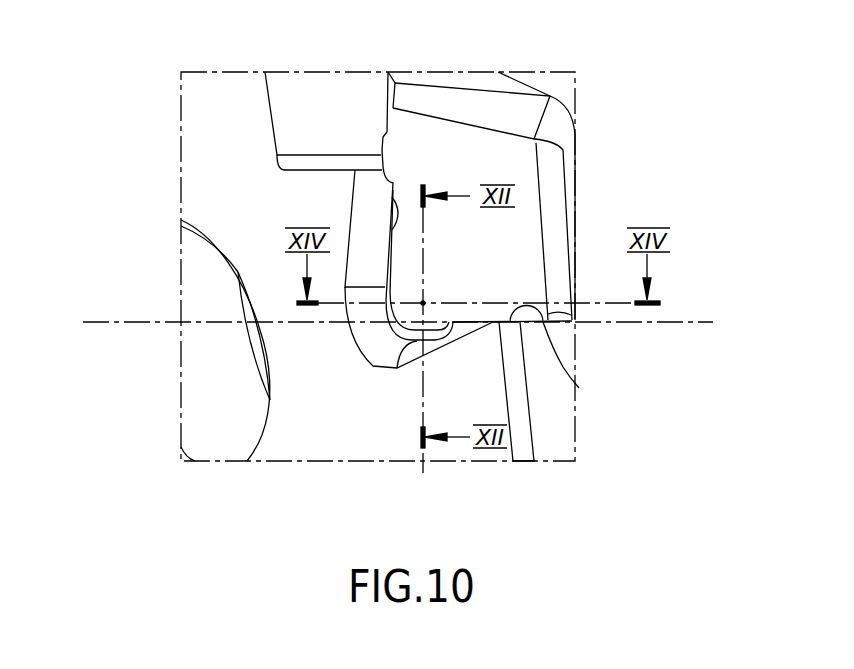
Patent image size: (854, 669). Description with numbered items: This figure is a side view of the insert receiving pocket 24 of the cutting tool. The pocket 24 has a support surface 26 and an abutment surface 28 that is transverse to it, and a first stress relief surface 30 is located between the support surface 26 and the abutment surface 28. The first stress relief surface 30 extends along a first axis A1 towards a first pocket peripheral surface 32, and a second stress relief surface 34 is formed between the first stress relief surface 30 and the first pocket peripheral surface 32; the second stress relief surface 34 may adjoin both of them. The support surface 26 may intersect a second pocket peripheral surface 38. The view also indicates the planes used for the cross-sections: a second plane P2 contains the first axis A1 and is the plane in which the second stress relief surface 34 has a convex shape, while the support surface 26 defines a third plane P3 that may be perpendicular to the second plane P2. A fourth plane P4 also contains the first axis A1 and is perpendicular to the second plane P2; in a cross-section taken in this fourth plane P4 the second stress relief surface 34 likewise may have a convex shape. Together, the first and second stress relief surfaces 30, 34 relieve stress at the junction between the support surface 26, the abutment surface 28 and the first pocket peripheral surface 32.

The pocket 24 is at (513, 233).
The support surface 26 is at (547, 333).
The abutment surface 28 is at (392, 198).
The first stress relief surface 30 is at (441, 332).
The first pocket peripheral surface 32 is at (333, 427).
The second stress relief surface 34 is at (391, 351).
The second pocket peripheral surface 38 is at (548, 411).
The first axis A1 is at (423, 303).
The second plane P2 is at (430, 332).
The third plane P3 is at (397, 324).
The fourth plane P4 is at (477, 303).